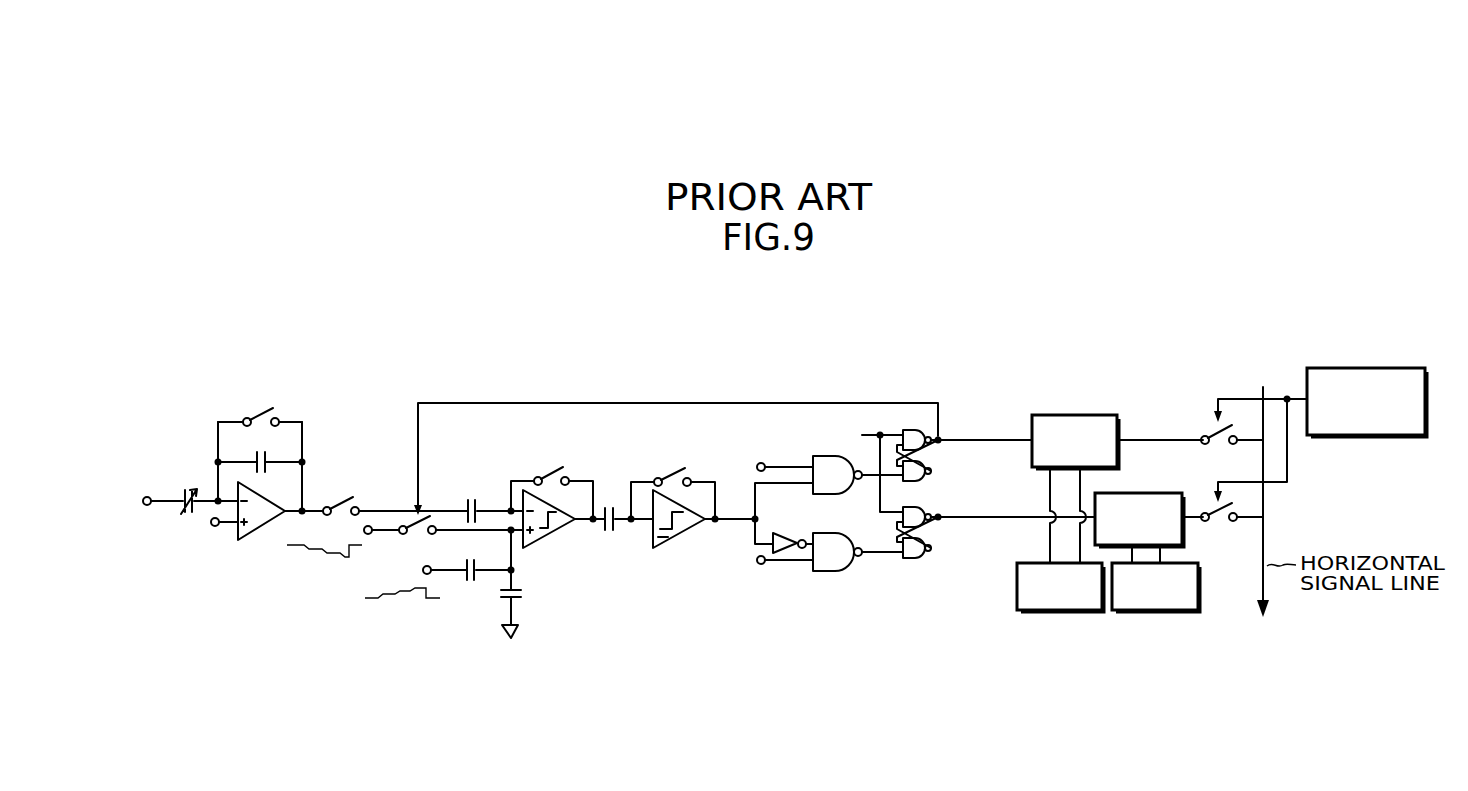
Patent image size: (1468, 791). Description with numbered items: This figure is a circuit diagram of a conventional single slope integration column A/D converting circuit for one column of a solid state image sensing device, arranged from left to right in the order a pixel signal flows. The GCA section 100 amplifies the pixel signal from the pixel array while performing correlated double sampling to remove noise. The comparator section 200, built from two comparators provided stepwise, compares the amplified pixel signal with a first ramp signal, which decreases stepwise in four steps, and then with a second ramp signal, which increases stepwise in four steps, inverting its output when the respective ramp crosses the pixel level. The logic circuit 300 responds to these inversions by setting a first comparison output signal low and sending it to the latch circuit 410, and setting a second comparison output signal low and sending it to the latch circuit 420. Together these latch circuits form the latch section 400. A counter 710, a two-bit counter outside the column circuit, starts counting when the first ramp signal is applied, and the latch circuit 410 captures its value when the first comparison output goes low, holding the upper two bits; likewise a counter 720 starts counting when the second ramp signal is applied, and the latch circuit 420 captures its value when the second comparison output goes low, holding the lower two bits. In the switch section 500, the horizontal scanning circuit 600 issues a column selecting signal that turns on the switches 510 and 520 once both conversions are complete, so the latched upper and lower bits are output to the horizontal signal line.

The GCA section 100 is at (303, 570).
The comparator section 200 is at (712, 683).
The logic circuit 300 is at (933, 683).
The latch section 400 is at (1070, 551).
The switch section 500 is at (1219, 544).
The latch circuit 410 is at (1040, 415).
The latch circuit 420 is at (1113, 493).
The switch 510 is at (1208, 425).
The switch 520 is at (1219, 521).
The horizontal scanning circuit 600 is at (1366, 368).
The counter 710 is at (1060, 612).
The counter 720 is at (1156, 611).